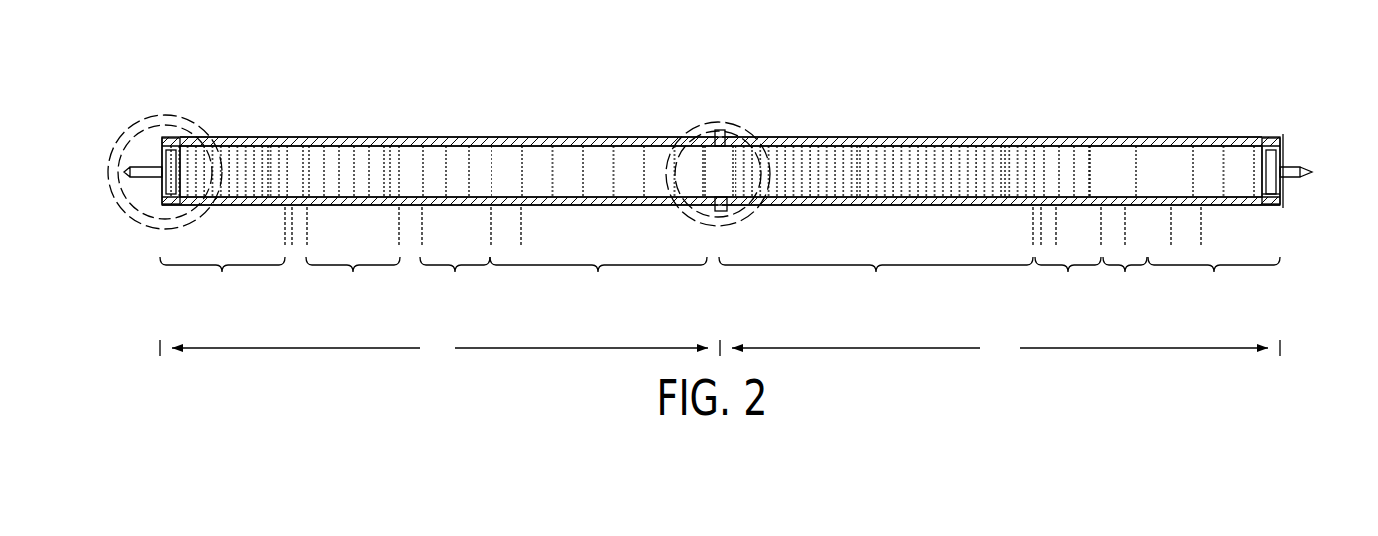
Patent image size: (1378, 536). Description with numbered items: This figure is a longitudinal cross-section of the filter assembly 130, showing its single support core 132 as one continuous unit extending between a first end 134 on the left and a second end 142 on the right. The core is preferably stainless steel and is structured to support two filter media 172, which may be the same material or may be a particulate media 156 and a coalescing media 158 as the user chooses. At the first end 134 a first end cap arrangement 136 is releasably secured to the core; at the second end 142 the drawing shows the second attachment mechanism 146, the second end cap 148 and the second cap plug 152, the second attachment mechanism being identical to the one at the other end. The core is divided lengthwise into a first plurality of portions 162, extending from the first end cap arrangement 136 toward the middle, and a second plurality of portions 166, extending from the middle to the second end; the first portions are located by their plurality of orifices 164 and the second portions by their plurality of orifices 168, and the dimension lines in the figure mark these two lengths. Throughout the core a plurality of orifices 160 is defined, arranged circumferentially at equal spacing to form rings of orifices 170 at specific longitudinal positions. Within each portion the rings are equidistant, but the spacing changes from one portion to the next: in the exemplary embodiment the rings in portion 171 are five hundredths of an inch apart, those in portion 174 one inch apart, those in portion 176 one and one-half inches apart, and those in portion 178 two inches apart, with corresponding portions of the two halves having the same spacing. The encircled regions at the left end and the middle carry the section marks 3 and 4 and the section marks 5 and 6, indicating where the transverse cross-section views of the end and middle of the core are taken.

The filter assembly 130 is at (805, 68).
The single support core 132 is at (508, 150).
The first end 134 is at (140, 103).
The first end cap arrangement 136 is at (128, 241).
The second end 142 is at (1290, 131).
The second attachment mechanism 146 is at (1281, 178).
The second end cap 148 is at (1283, 157).
The second cap plug 152 is at (1283, 198).
The particulate media 156 is at (570, 140).
The coalescing media 158 is at (962, 137).
The orifices 160 is at (303, 131).
The first plurality of portions 162 is at (440, 348).
The plurality of orifices 164 is at (208, 308).
The second plurality of portions 166 is at (1006, 348).
The plurality of orifices 168 is at (1268, 301).
The rings of orifices 170 is at (268, 131).
The portion 171 is at (597, 228).
The filter media 172 is at (390, 119).
The portion 174 is at (704, 228).
The portion 176 is at (784, 228).
The portion 178 is at (885, 228).
The section line 3- 3 is at (160, 117).
The section line 4- 4 is at (172, 126).
The section line 5- 5 is at (667, 153).
The section line 6- 6 is at (690, 147).